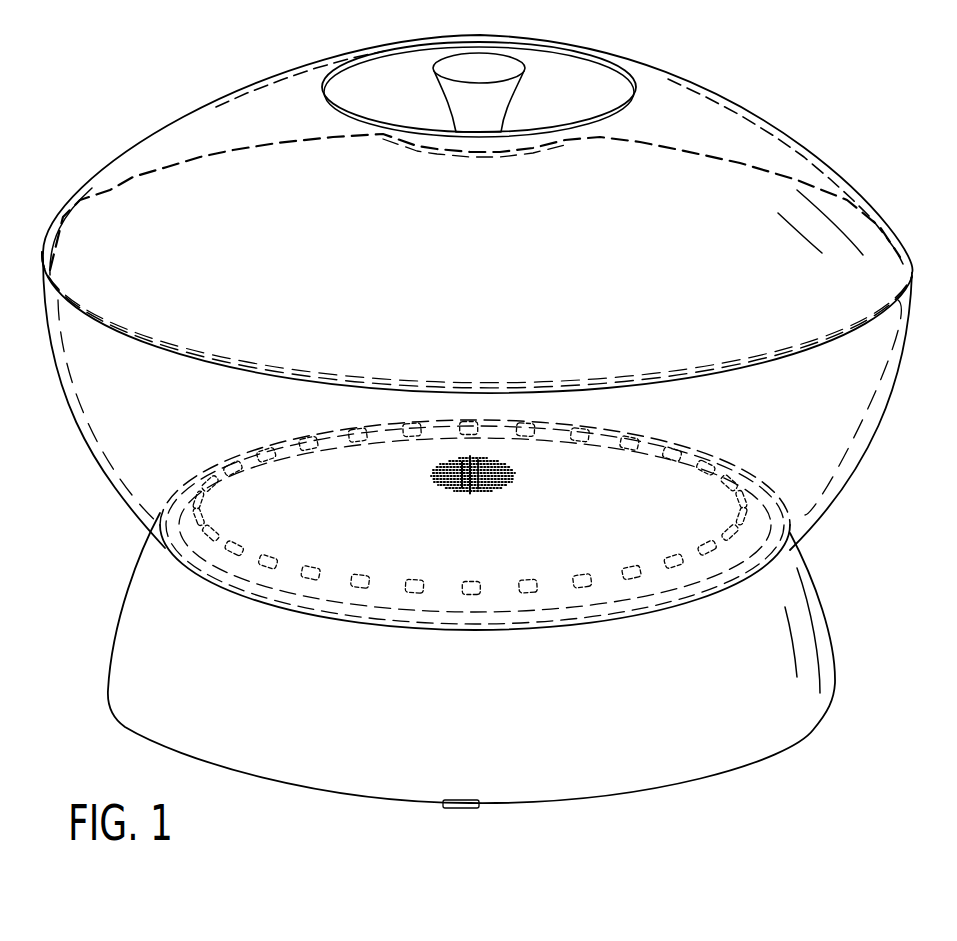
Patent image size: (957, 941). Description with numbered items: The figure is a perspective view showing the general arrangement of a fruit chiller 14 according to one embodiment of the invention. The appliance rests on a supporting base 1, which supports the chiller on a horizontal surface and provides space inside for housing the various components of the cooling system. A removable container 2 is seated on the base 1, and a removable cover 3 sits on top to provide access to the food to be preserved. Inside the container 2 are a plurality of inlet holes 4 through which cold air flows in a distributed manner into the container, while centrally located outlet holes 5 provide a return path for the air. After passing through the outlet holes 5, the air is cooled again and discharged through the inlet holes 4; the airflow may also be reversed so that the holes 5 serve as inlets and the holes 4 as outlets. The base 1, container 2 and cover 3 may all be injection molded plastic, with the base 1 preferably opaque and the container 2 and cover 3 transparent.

The supporting base 1 is at (173, 717).
The removable container 2 is at (128, 405).
The removable cover 3 is at (200, 140).
The inlet holes 4 is at (663, 553).
The outlet holes 5 is at (513, 467).
The fruit chiller 14 is at (777, 119).